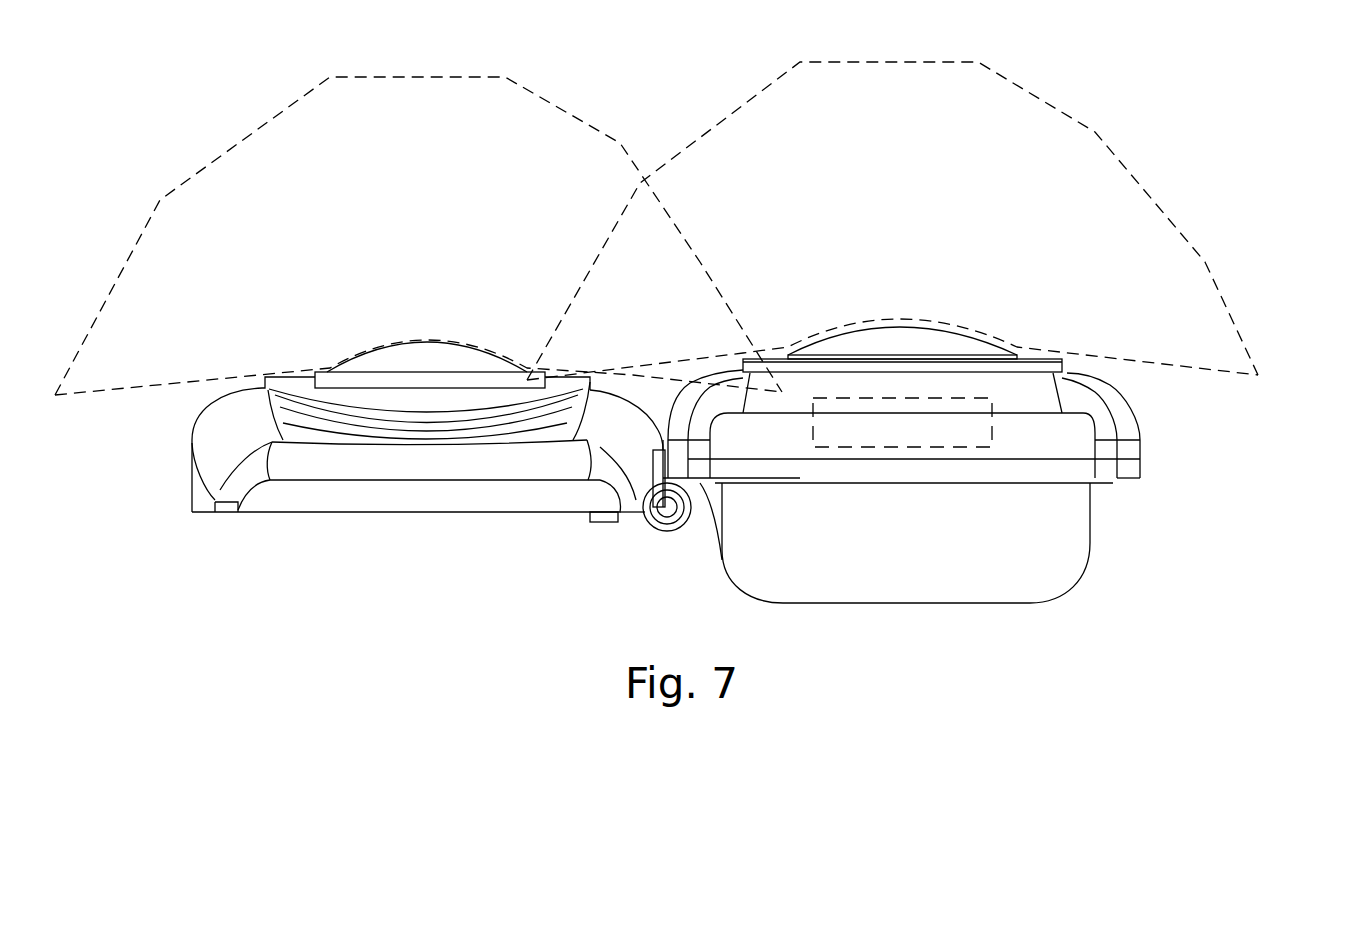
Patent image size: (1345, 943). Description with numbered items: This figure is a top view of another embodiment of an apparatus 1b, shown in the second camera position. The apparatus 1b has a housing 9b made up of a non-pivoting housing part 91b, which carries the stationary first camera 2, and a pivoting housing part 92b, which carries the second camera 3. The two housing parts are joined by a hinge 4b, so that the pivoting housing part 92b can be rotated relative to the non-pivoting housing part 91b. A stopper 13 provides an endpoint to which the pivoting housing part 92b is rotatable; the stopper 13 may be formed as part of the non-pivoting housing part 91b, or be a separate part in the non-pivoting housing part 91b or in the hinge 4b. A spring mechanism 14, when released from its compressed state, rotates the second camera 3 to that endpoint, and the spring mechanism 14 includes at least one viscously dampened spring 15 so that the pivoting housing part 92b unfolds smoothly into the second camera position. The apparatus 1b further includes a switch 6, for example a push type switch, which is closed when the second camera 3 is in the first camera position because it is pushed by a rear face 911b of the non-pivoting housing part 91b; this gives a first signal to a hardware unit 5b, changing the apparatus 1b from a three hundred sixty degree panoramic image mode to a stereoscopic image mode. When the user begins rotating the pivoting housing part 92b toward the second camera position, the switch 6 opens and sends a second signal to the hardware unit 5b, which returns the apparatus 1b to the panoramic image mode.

The apparatus 1b is at (222, 188).
The stationary first camera 2 is at (982, 383).
The second camera 3 is at (417, 395).
The hinge 4b is at (678, 532).
The hardware unit 5b is at (913, 432).
The switch 6 is at (602, 522).
The housing 9b is at (542, 533).
The stopper 13 is at (640, 510).
The spring mechanism 14 is at (712, 505).
The viscously dampened spring 15 is at (660, 527).
The non-pivoting housing part 91b is at (1138, 466).
The rear face 911b is at (1033, 485).
The pivoting housing part 92b is at (317, 455).